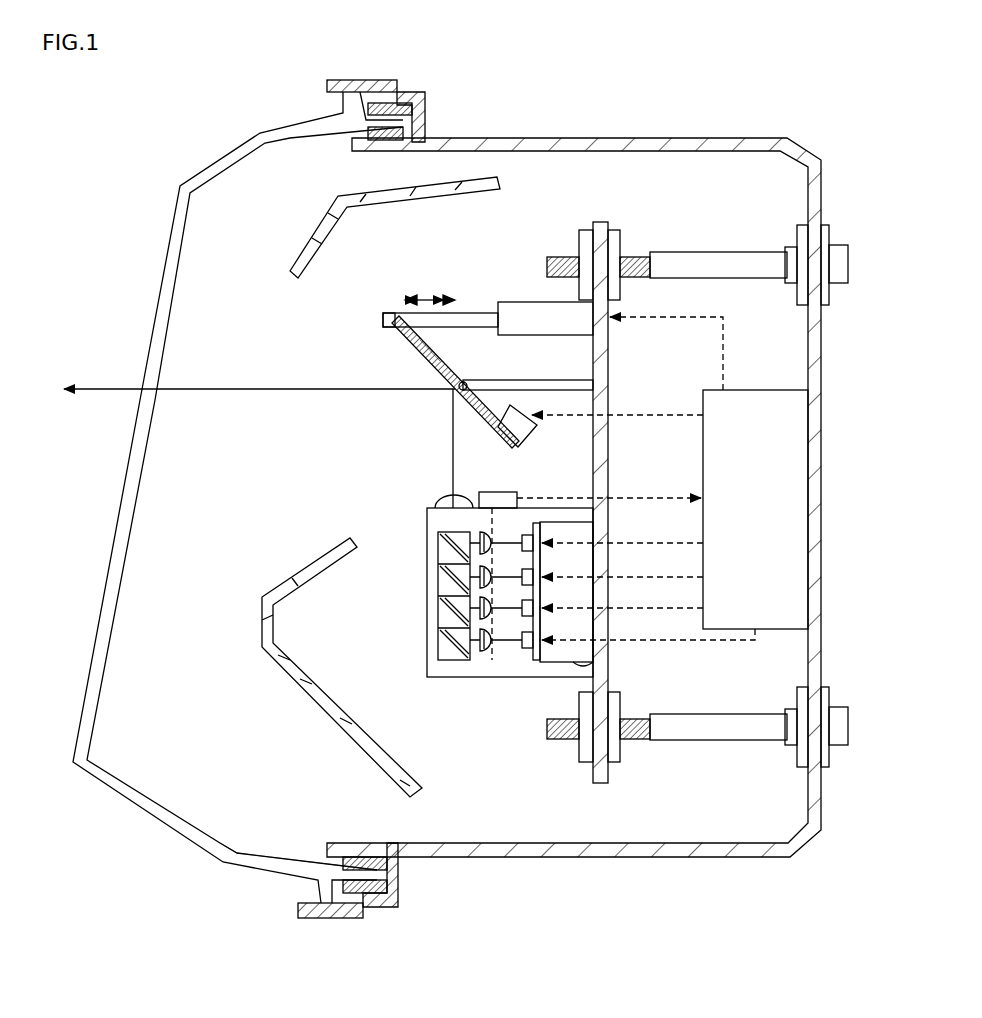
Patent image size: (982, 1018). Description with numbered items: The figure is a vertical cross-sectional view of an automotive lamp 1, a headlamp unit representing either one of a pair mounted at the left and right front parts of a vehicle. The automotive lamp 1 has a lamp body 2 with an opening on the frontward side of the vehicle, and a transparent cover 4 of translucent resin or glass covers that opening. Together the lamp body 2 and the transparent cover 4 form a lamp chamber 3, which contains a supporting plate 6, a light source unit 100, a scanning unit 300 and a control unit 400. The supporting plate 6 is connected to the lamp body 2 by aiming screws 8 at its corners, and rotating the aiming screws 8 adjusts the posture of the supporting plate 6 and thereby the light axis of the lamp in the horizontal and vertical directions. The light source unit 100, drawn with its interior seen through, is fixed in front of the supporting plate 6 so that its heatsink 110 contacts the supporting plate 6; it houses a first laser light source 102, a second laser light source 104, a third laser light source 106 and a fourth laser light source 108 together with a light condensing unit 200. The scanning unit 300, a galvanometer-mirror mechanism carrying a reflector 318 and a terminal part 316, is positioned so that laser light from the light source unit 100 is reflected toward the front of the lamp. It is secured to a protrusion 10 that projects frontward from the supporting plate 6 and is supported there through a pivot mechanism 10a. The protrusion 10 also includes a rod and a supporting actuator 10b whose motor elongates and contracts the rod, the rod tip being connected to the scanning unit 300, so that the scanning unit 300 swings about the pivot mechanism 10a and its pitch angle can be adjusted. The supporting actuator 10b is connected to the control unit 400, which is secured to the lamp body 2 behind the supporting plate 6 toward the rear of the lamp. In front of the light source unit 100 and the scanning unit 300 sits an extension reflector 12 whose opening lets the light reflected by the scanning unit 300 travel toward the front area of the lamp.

The automotive lamp 1 is at (452, 1012).
The lamp body 2 is at (742, 858).
The lamp chamber 3 is at (236, 822).
The transparent cover 4 is at (138, 812).
The supporting plate 6 is at (604, 222).
The aiming screws 8 is at (711, 252).
The protrusion 10 is at (540, 378).
The pivot mechanism 10a is at (466, 382).
The supporting actuator 10b is at (498, 312).
The extension reflector 12 is at (310, 233).
The light source unit 100 is at (519, 620).
The first laser light source 102 is at (535, 533).
The second laser light source 104 is at (535, 567).
The third laser light source 106 is at (535, 598).
The fourth laser light source 108 is at (535, 630).
The heatsink 110 is at (580, 668).
The light condensing unit 200 is at (436, 587).
The scanning unit 300 is at (394, 341).
The terminal part 316 is at (534, 430).
The reflector 318 is at (442, 381).
The control unit 400 is at (787, 390).